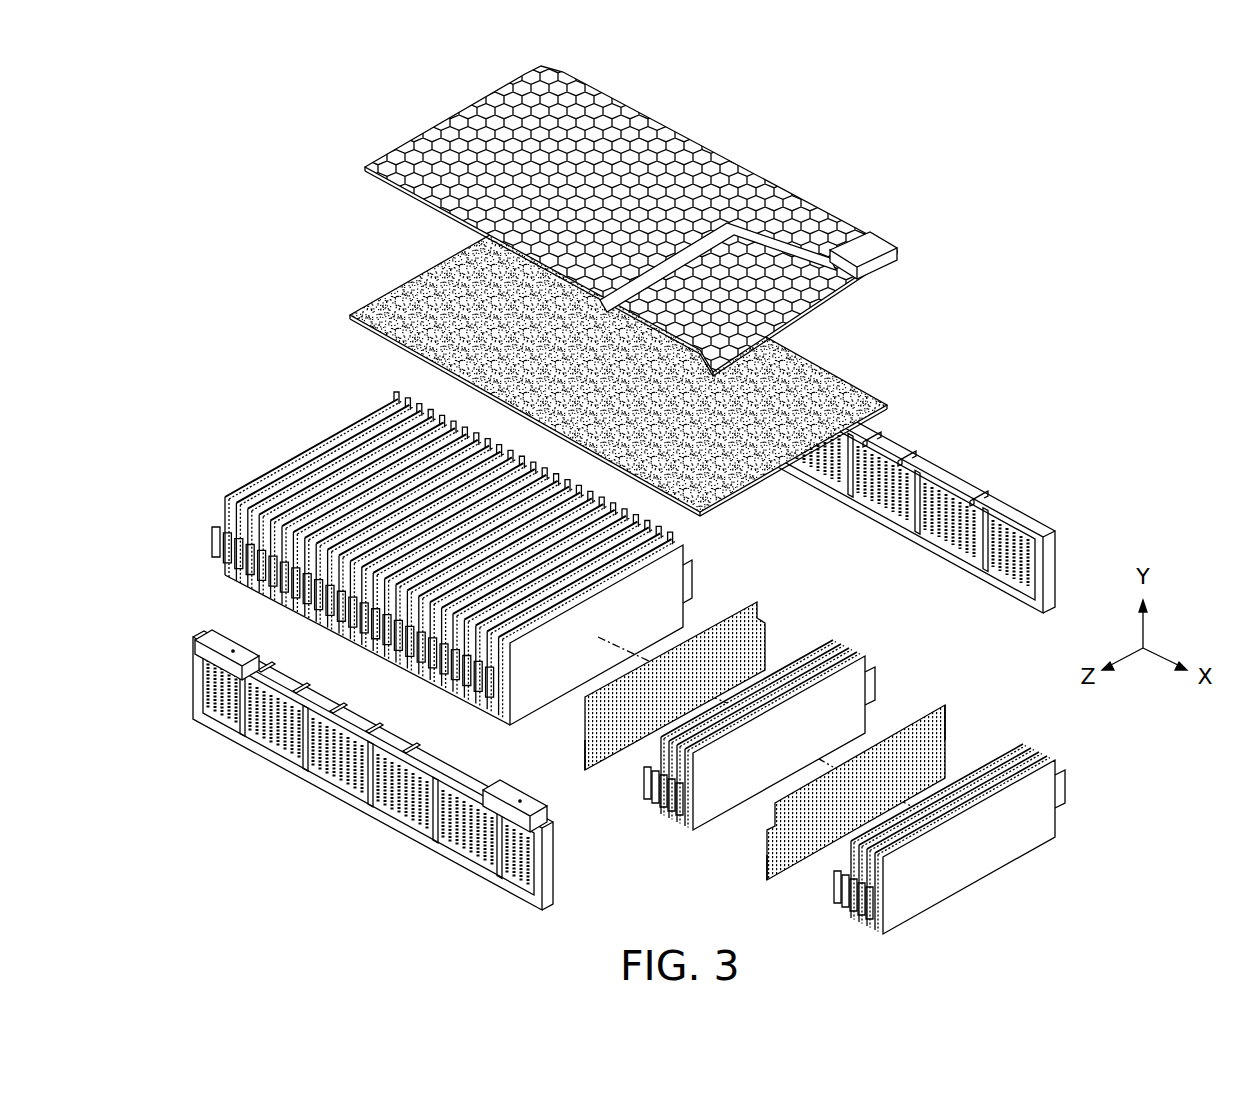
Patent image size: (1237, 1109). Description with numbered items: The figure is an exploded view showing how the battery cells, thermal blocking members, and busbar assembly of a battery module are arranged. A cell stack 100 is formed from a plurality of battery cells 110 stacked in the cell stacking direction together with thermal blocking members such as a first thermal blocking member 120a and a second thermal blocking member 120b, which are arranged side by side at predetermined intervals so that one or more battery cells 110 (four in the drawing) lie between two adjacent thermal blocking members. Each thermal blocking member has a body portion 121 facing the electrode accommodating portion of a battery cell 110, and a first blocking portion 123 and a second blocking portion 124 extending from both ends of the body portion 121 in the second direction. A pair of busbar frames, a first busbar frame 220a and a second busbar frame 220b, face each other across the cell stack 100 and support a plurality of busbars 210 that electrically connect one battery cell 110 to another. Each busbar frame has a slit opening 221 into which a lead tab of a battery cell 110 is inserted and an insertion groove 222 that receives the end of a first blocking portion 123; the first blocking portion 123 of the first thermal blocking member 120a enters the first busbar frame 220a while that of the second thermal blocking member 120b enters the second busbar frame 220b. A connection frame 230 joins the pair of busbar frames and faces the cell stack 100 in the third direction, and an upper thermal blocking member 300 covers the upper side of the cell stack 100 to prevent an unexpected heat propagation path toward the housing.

The cell stack 100 is at (290, 446).
The battery cell 110 is at (652, 592).
The first thermal blocking member 120a is at (919, 775).
The second thermal blocking member 120b is at (760, 588).
The body portion 121 is at (838, 815).
The first blocking portion 123 is at (766, 626).
The second blocking portion 124 is at (600, 741).
The busbar 210 is at (265, 740).
The first busbar frame 220a is at (373, 770).
The second busbar frame 220b is at (895, 473).
The slit opening 221 is at (1002, 540).
The insertion groove 222 is at (977, 520).
The connection frame 230 is at (445, 148).
The upper thermal blocking member 300 is at (418, 338).